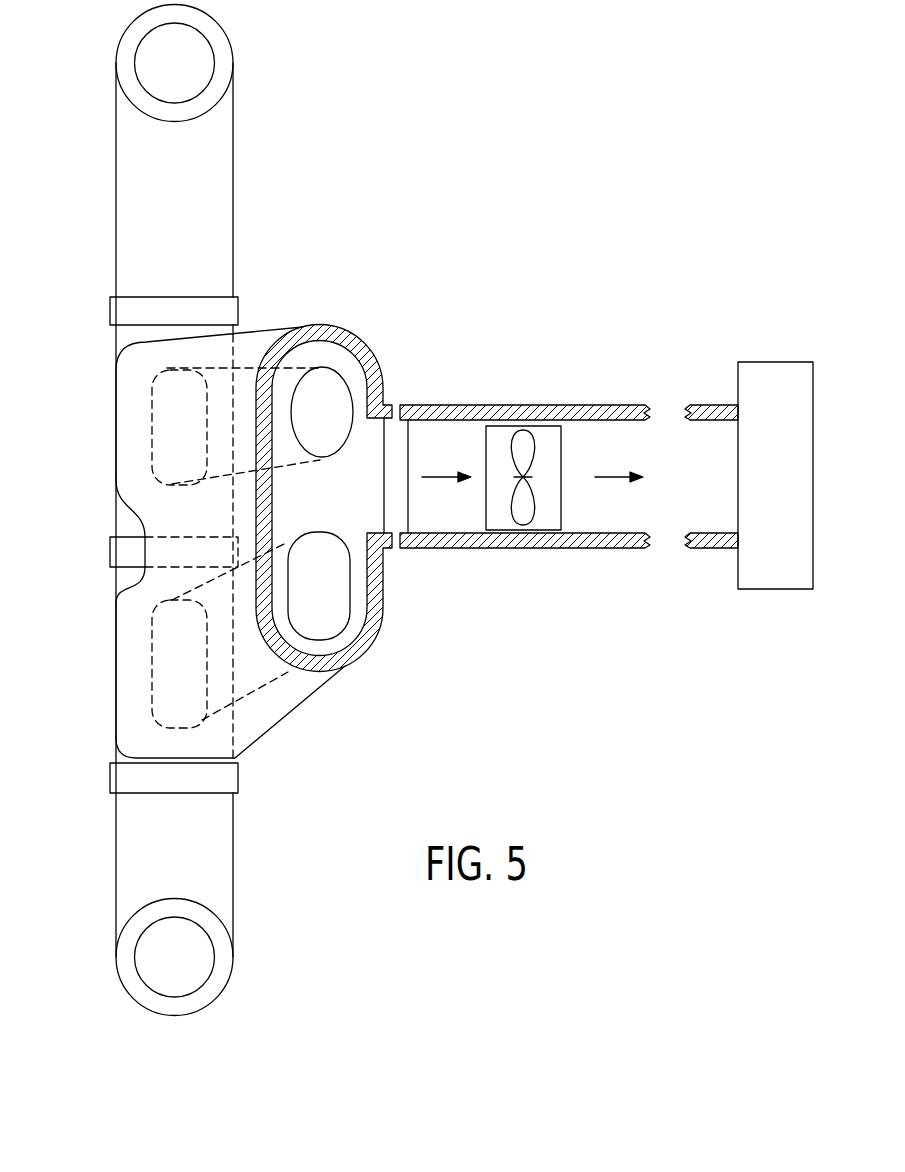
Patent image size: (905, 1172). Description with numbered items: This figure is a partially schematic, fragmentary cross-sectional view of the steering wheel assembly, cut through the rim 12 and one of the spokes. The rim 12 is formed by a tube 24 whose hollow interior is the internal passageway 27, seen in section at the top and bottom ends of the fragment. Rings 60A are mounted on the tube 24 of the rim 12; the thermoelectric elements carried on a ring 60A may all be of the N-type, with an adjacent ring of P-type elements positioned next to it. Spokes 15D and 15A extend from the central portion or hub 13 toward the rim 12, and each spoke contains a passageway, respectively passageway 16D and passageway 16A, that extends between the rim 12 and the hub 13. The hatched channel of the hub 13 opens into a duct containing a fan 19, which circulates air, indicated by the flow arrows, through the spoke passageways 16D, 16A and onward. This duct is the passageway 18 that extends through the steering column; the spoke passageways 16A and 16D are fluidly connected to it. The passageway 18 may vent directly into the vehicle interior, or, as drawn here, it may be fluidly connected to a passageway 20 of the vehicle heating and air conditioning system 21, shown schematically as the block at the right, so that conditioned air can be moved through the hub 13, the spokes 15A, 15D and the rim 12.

The rim 12 is at (233, 135).
The tube 24 is at (215, 38).
The internal passageway 27 is at (190, 70).
The ring 60A is at (238, 300).
The central portion or hub 13 is at (355, 345).
The spoke 15D is at (265, 332).
The spoke 15A is at (300, 707).
The passageway 16D is at (333, 405).
The passageway 16A is at (327, 605).
The passageway 18 is at (617, 437).
The fan 19 is at (523, 527).
The vehicle heating and air conditioning system 21 is at (707, 550).
The passageway 20 is at (770, 590).